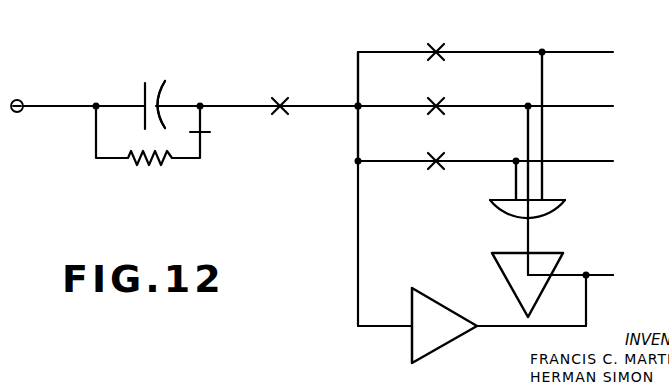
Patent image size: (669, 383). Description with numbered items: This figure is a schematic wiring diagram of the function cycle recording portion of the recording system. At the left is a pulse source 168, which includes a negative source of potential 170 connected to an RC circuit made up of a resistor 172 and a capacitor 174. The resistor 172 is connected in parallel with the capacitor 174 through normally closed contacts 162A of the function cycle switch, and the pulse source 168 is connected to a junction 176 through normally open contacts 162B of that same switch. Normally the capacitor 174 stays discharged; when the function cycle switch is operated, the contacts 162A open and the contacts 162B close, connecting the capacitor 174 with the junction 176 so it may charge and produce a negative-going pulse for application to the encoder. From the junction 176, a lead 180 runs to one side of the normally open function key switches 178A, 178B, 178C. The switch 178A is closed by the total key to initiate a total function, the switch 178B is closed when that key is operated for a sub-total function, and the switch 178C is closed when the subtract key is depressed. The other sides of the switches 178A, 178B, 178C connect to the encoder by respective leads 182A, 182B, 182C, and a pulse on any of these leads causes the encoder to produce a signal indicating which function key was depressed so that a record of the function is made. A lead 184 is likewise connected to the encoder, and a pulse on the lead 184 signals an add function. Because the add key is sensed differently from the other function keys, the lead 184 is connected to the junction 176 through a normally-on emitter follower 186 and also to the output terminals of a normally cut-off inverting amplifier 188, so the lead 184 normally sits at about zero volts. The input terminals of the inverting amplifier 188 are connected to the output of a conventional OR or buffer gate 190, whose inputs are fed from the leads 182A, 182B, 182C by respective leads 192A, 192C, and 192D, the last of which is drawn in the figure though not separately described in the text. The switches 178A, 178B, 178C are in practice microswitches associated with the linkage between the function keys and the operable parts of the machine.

The negative source of potential 170 is at (21, 103).
The pulse source 168 is at (155, 75).
The capacitor 174 is at (161, 94).
The resistor 172 is at (166, 166).
The normally closed contacts 162A is at (206, 136).
The normally open contacts 162B is at (281, 113).
The junction 176 is at (355, 104).
The lead 180 is at (359, 73).
The function key switch 178A is at (439, 46).
The function key switch 178B is at (439, 100).
The function key switch 178C is at (434, 153).
The lead 182A is at (536, 51).
The lead 182B is at (507, 104).
The lead 182C is at (479, 150).
The lead 192A is at (544, 88).
The lead 192C is at (531, 136).
The conductor 192D is at (515, 187).
The OR or buffer gate 190 is at (546, 197).
The inverting amplifier 188 is at (563, 263).
The lead 184 is at (611, 275).
The emitter follower 186 is at (470, 314).